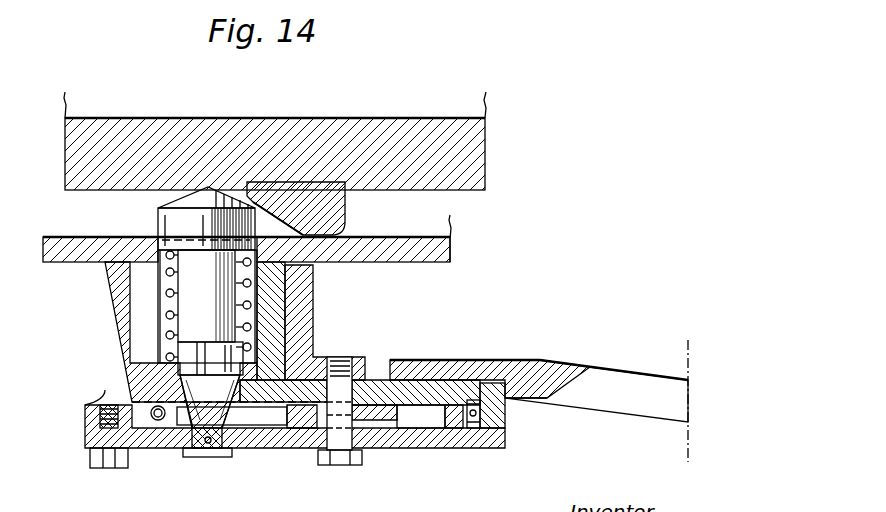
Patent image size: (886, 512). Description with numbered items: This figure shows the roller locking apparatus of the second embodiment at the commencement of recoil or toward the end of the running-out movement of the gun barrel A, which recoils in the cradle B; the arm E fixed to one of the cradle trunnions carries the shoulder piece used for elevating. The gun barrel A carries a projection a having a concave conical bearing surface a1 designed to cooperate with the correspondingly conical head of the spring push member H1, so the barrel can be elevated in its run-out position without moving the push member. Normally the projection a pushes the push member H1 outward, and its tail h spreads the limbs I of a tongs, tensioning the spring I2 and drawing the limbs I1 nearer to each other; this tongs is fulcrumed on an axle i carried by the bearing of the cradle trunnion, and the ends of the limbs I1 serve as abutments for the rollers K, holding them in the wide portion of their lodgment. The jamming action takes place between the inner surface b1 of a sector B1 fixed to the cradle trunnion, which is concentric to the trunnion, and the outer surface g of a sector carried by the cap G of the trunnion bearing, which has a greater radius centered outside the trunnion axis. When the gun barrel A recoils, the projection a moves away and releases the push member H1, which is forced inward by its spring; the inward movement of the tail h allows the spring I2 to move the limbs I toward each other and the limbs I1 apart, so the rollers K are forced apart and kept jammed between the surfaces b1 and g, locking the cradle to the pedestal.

The gun barrel A is at (463, 157).
The projection a is at (328, 217).
The concave conical bearing surface a1 is at (278, 225).
The cradle B is at (432, 262).
The spring push member H1 is at (173, 217).
The tail h is at (207, 418).
The cap G is at (297, 437).
The limbs of the tongs I is at (255, 418).
The spring I2 is at (160, 421).
The axle i is at (342, 390).
The limbs I1 is at (413, 422).
The outer surface g is at (460, 427).
The inner surface b1 is at (482, 420).
The rollers K is at (477, 400).
The sector B1 is at (487, 385).
The arm E is at (630, 388).